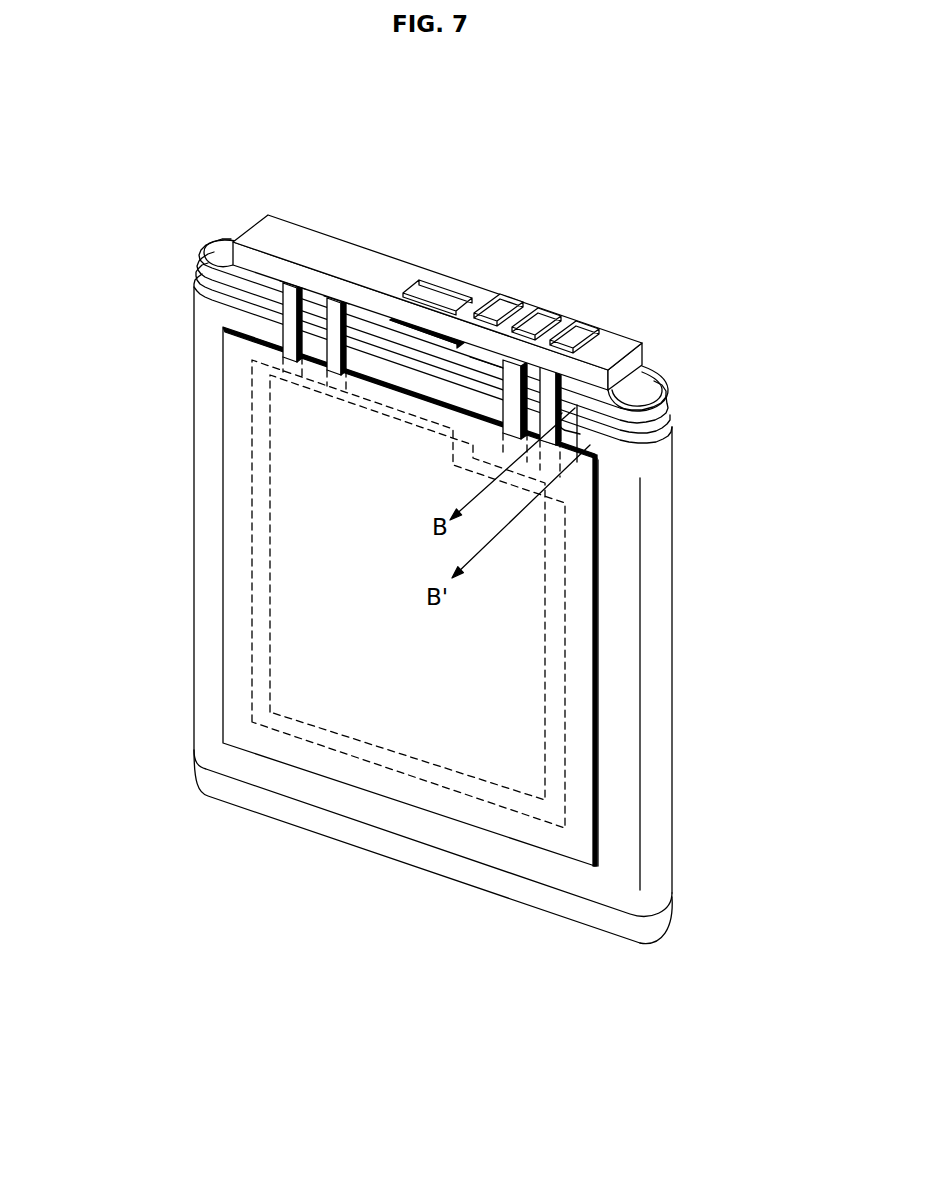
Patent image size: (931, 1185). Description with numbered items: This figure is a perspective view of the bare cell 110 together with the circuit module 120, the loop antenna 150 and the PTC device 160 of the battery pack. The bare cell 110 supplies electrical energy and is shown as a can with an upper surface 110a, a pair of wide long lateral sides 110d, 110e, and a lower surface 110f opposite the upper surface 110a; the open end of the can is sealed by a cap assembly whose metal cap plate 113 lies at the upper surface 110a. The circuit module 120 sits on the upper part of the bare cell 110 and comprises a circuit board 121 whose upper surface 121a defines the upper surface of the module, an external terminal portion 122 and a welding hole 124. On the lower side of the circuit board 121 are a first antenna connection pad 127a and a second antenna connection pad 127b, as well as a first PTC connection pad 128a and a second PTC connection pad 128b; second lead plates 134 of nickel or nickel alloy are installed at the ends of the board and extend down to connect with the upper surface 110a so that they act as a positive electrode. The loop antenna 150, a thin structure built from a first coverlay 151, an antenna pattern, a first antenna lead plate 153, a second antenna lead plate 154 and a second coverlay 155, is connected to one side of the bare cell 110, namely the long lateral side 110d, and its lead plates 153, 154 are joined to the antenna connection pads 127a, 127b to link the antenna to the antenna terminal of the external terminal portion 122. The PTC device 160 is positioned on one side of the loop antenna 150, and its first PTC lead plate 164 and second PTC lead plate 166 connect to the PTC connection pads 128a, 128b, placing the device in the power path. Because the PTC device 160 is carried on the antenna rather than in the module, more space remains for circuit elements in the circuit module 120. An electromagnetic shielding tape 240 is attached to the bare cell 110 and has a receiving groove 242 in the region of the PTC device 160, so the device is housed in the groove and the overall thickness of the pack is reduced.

The bare cell 110 is at (180, 545).
The upper surface 110a is at (204, 262).
The long lateral side 110d is at (418, 855).
The long lateral side 110e is at (662, 913).
The lower surface 110f is at (657, 937).
The cap plate 113 is at (205, 292).
The circuit module 120 is at (660, 357).
The circuit board 121 is at (272, 225).
The upper surface 121a is at (335, 245).
The external terminal portion 122 is at (550, 300).
The welding hole 124 is at (433, 285).
The first antenna connection pad 127a is at (290, 280).
The second antenna connection pad 127b is at (340, 297).
The first PTC connection pad 128a is at (548, 368).
The second PTC connection pad 128b is at (512, 358).
The second lead plates 134 is at (655, 391).
The loop antenna 150 is at (223, 403).
The first coverlay 151 is at (598, 623).
The first antenna lead plate 153 is at (290, 316).
The second antenna lead plate 154 is at (333, 336).
The second coverlay 155 is at (603, 575).
The PTC device 160 is at (572, 457).
The first PTC lead plate 164 is at (580, 420).
The second PTC lead plate 166 is at (485, 365).
The electromagnetic shielding tape 240 is at (668, 513).
The receiving groove 242 is at (600, 437).